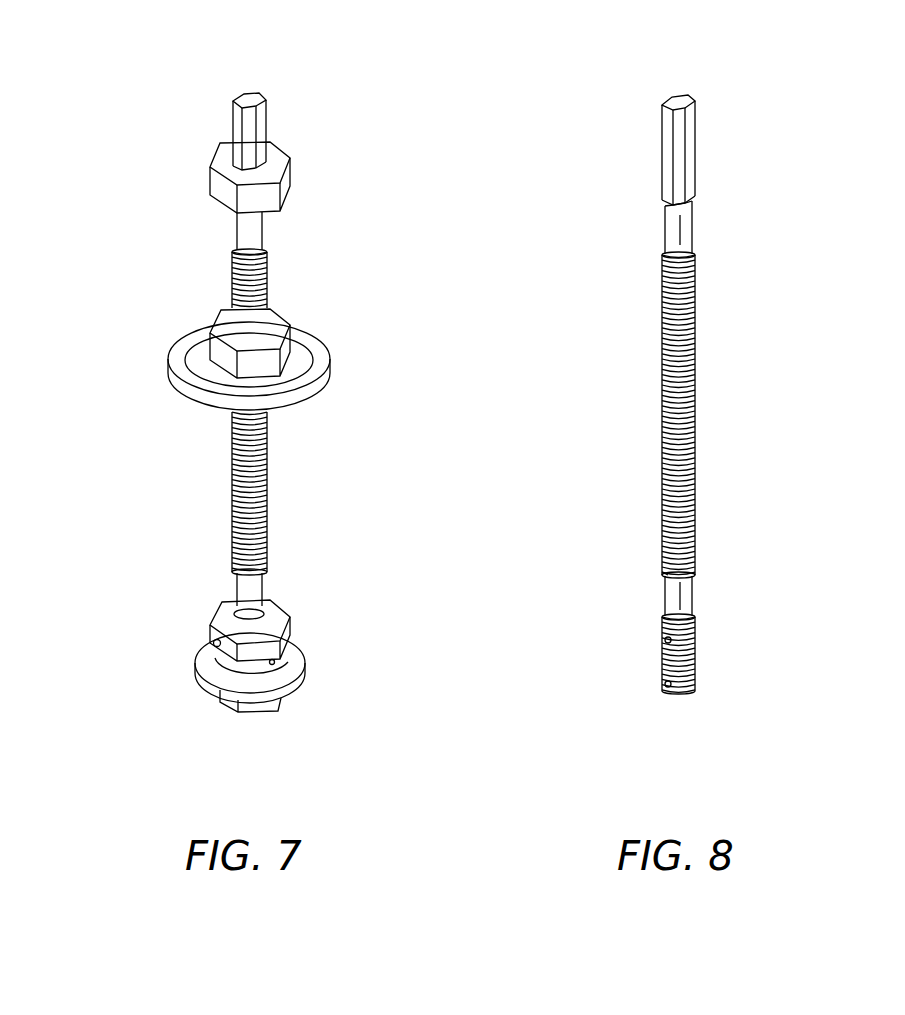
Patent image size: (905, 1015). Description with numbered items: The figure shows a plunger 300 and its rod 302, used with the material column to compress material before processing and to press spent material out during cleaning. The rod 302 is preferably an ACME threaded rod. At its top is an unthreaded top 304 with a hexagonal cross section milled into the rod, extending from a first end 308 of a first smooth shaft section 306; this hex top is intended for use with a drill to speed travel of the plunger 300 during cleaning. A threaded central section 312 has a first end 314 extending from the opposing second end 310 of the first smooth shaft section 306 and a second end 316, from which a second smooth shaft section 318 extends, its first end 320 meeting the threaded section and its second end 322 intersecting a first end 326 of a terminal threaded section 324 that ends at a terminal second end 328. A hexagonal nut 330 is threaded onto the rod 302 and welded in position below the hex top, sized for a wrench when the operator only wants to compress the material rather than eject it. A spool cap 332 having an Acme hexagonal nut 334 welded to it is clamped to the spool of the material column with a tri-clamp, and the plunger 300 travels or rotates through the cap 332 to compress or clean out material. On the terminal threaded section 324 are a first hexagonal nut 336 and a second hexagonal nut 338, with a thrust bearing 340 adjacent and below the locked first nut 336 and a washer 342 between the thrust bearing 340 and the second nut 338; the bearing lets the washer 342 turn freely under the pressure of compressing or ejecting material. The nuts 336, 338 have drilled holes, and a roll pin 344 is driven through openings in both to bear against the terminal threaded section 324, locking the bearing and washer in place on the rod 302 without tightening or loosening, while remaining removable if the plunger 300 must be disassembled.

In FIG. 7, the plunger 300 is at (143, 308).
In FIG. 7, the rod 302 is at (239, 83).
In FIG. 8, the rod 302 is at (605, 298).
In FIG. 7, the unthreaded top 304 is at (232, 118).
In FIG. 8, the unthreaded top 304 is at (660, 120).
In FIG. 7, the first smooth shaft section 306 is at (236, 228).
In FIG. 8, the first smooth shaft section 306 is at (663, 228).
In FIG. 8, the first end of first smooth shaft section 308 is at (696, 209).
In FIG. 8, the second end of first smooth shaft section 310 is at (688, 240).
In FIG. 7, the threaded central section 312 is at (231, 446).
In FIG. 8, the threaded central section 312 is at (660, 408).
In FIG. 8, the first end of threaded central section 314 is at (694, 253).
In FIG. 8, the second end of threaded central section 316 is at (661, 572).
In FIG. 7, the second smooth shaft section 318 is at (234, 581).
In FIG. 8, the second smooth shaft section 318 is at (663, 590).
In FIG. 8, the first end of second smooth shaft section 320 is at (694, 580).
In FIG. 8, the second end of second smooth shaft section 322 is at (684, 595).
In FIG. 8, the terminal threaded section 324 is at (660, 655).
In FIG. 8, the first end of terminal threaded section 326 is at (694, 613).
In FIG. 8, the terminal second end 328 is at (686, 696).
In FIG. 7, the hexagonal nut 330 is at (281, 146).
In FIG. 7, the spool cap 332 is at (327, 335).
In FIG. 7, the Acme hexagonal nut 334 is at (279, 315).
In FIG. 7, the first hexagonal nut 336 is at (293, 620).
In FIG. 7, the second hexagonal nut 338 is at (255, 703).
In FIG. 7, the thrust bearing 340 is at (226, 660).
In FIG. 7, the washer 342 is at (301, 678).
In FIG. 7, the roll pin 344 is at (212, 642).